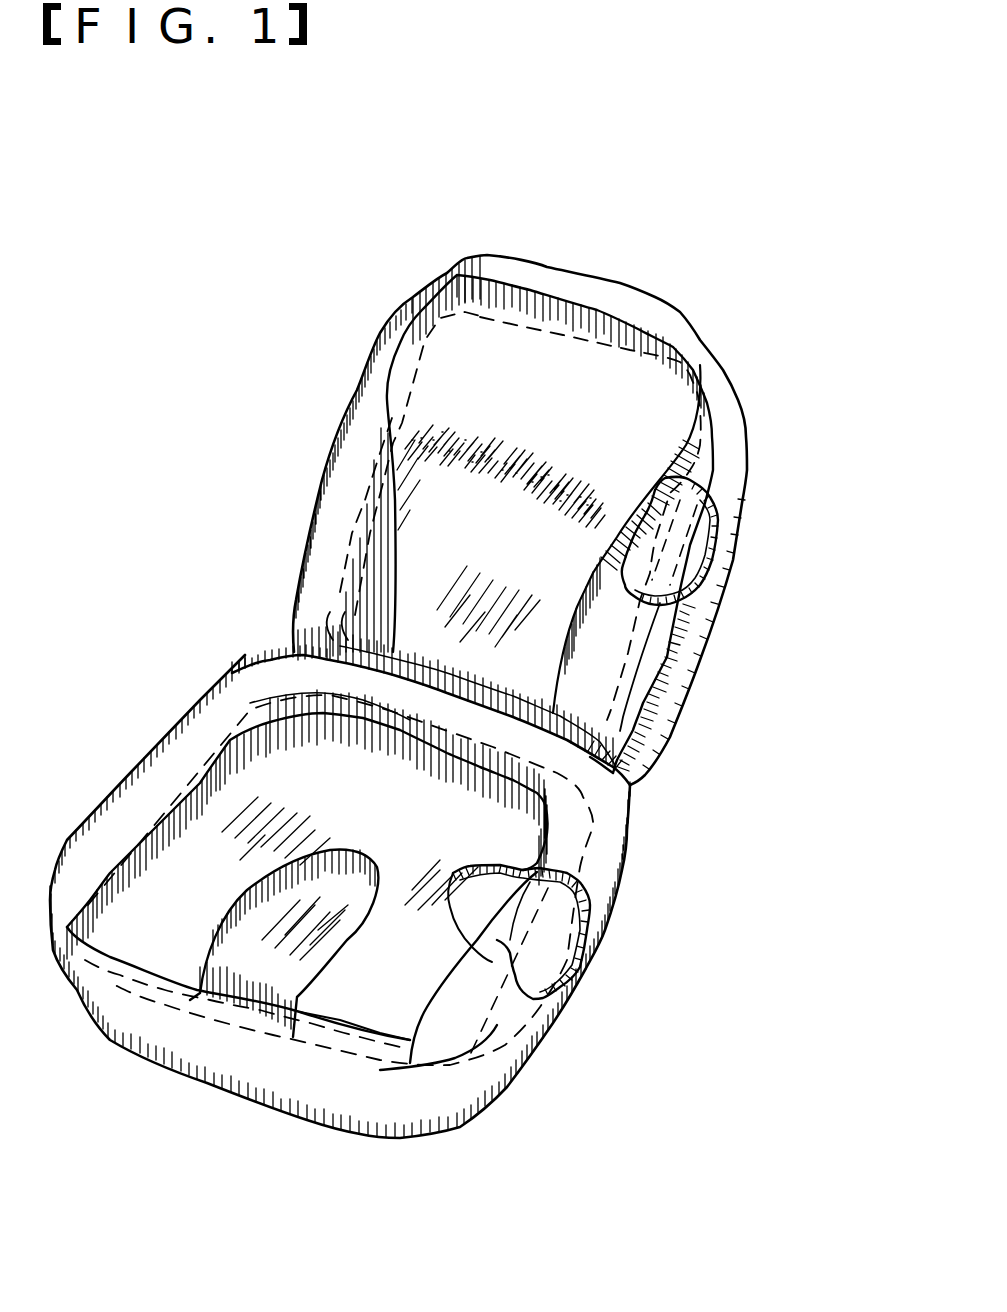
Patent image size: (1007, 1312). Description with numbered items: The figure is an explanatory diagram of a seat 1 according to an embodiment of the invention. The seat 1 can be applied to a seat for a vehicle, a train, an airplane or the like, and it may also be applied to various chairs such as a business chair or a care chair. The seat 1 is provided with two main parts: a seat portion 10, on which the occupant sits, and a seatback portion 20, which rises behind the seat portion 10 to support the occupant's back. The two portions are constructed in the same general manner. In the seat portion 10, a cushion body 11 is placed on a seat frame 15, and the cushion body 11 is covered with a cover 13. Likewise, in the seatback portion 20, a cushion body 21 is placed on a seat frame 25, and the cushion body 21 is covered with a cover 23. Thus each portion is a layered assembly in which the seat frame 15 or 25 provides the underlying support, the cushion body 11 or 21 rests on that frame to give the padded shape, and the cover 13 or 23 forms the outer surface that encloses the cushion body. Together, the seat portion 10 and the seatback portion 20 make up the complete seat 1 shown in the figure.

The seat 1 is at (334, 244).
The seat portion 10 is at (613, 843).
The cushion body 11 is at (553, 950).
The cover 13 is at (493, 1027).
The seat frame 15 is at (467, 1127).
The seatback portion 20 is at (713, 350).
The cushion body 21 is at (682, 540).
The cover 23 is at (657, 653).
The seat frame 25 is at (700, 460).